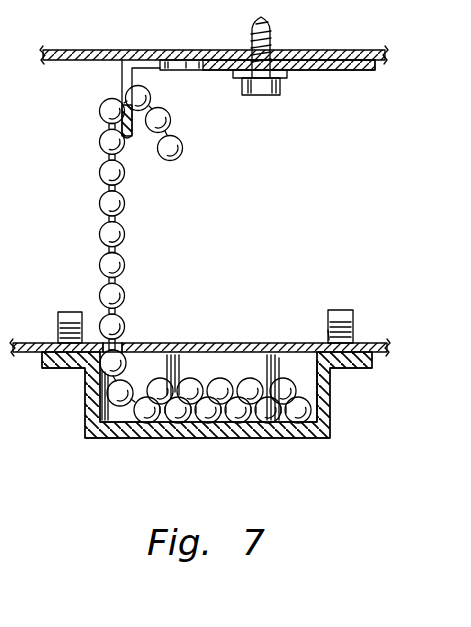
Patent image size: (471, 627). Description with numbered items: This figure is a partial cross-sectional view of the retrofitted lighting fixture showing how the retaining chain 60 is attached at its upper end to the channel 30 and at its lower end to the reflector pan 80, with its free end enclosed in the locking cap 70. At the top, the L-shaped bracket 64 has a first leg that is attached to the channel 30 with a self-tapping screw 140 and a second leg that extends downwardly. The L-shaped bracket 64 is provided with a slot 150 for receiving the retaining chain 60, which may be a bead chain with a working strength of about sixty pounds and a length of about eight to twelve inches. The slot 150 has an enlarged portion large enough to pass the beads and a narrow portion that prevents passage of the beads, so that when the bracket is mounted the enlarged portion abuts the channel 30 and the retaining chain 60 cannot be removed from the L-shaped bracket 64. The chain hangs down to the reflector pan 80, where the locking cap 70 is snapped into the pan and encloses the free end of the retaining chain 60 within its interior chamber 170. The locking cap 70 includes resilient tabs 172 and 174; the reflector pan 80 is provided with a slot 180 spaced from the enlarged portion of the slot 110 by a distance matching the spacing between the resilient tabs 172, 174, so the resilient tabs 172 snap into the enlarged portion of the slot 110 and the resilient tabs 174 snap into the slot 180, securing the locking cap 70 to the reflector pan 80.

The channel 30 is at (84, 50).
The L-shaped bracket 64 is at (315, 72).
The slot 150 is at (118, 74).
The self-tapping screw 140 is at (263, 88).
The retaining chain 60 is at (126, 232).
The slot 110 is at (60, 341).
The reflector pan 80 is at (232, 343).
The resilient tabs 172 is at (68, 312).
The resilient tabs 174 is at (340, 310).
The slot 180 is at (328, 330).
The locking cap 70 is at (197, 440).
The interior chamber 170 is at (307, 375).